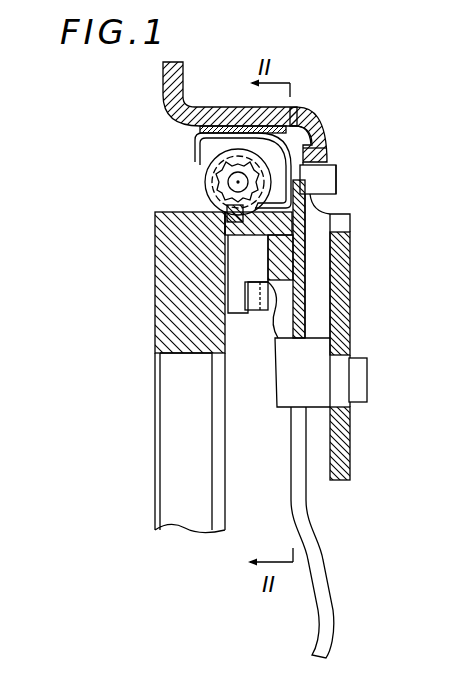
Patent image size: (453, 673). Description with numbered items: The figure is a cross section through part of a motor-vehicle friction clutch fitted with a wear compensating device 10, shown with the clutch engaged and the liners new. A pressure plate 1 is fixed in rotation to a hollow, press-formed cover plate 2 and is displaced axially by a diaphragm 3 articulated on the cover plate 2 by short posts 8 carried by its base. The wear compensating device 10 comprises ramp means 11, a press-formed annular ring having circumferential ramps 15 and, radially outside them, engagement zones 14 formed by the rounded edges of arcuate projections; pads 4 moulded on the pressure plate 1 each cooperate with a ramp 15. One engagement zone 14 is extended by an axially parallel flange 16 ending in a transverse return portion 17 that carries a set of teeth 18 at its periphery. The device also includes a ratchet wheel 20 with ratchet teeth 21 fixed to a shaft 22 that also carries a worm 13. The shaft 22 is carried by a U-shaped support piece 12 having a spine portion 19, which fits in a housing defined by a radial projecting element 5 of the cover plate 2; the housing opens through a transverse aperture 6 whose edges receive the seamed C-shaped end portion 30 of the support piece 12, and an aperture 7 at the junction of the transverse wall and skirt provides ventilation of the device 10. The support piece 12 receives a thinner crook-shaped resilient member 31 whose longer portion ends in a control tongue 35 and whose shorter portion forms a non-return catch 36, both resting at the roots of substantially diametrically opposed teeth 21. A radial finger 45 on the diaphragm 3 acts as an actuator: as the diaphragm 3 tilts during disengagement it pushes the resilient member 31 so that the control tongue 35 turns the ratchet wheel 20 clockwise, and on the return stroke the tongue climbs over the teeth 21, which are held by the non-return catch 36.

The pressure plate 1 is at (148, 271).
The cover plate 2 is at (357, 326).
The diaphragm 3 is at (319, 527).
The pads 4 is at (250, 312).
The radial projecting element 5 is at (233, 106).
The transverse aperture 6 is at (340, 224).
The aperture 7 is at (295, 106).
The short posts 8 is at (372, 375).
The wear compensating device 10 is at (353, 121).
The ramp means 11 is at (267, 324).
The support piece 12 is at (193, 135).
The worm 13 is at (220, 206).
The engagement zones 14 is at (300, 240).
The ramps 15 is at (277, 342).
The flange 16 is at (322, 213).
The return portion 17 is at (245, 225).
The set of teeth 18 is at (232, 210).
The spine portion 19 is at (210, 126).
The ratchet wheel 20 is at (298, 122).
The ratchet teeth 21 is at (228, 183).
The shaft 22 is at (314, 160).
The C-shaped end portion 30 is at (302, 172).
The resilient member 31 is at (193, 152).
The control tongue 35 is at (248, 274).
The non-return catch 36 is at (205, 170).
The radial finger 45 is at (326, 176).